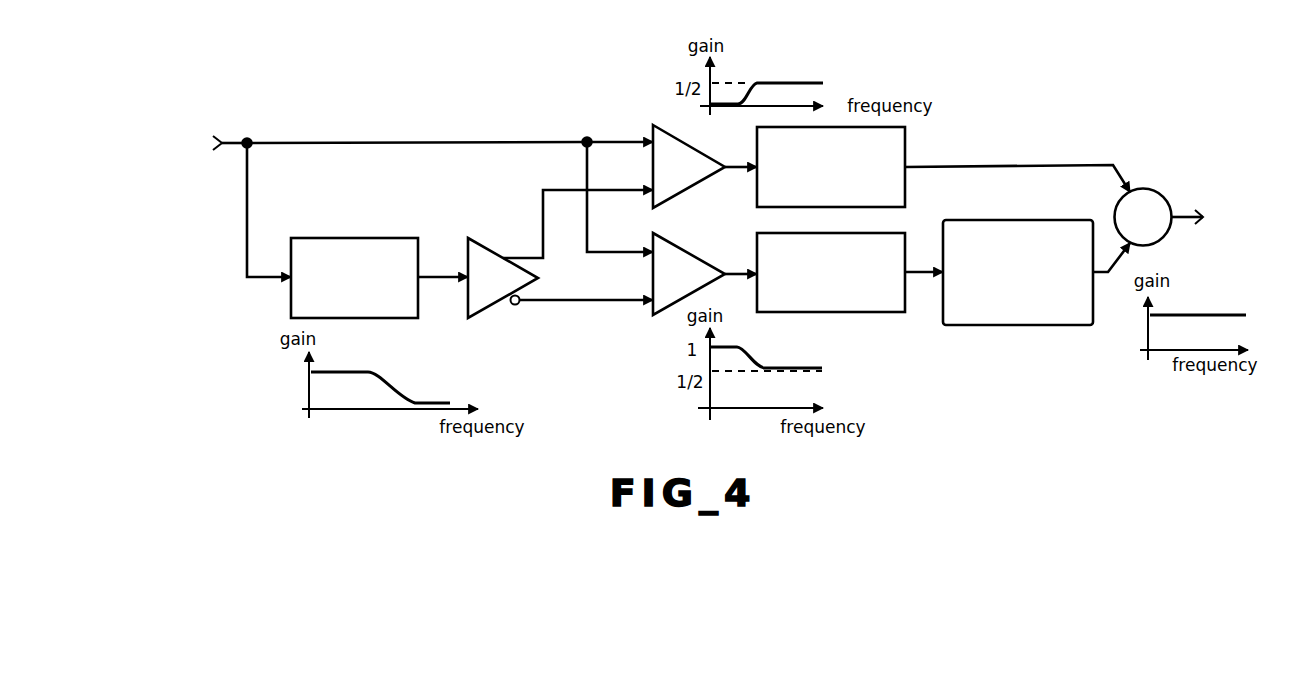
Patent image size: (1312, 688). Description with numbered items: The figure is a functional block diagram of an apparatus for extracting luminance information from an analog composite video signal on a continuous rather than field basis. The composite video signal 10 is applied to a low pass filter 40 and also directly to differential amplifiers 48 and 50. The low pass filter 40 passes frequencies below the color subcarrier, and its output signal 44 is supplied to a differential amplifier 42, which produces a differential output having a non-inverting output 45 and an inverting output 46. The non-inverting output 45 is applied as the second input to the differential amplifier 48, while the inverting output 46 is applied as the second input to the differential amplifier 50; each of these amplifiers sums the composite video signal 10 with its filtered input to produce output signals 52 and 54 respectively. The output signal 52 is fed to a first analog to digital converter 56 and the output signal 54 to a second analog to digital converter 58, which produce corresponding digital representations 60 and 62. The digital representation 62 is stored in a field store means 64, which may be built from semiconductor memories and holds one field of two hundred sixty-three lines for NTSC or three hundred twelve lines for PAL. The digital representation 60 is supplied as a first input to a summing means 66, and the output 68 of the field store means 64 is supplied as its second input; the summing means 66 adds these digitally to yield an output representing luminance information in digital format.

The composite video signal 10 is at (233, 146).
The low pass filter 40 is at (363, 240).
The differential amplifier 42 is at (483, 252).
The output signal 44 is at (440, 277).
The subtractor non-inverted output line 45 is at (543, 190).
The inverting output 46 is at (580, 300).
The differential amplifier 48 is at (697, 160).
The differential amplifier 50 is at (677, 248).
The output signal 52 is at (736, 168).
The output signal 54 is at (735, 272).
The first analog to digital converter 56 is at (897, 150).
The second analog to digital converter 58 is at (835, 303).
The digital representation 60 is at (1045, 164).
The digital representation 62 is at (920, 274).
The field store means 64 is at (1002, 220).
The summing means 66 is at (1163, 192).
The output 68 is at (1108, 274).